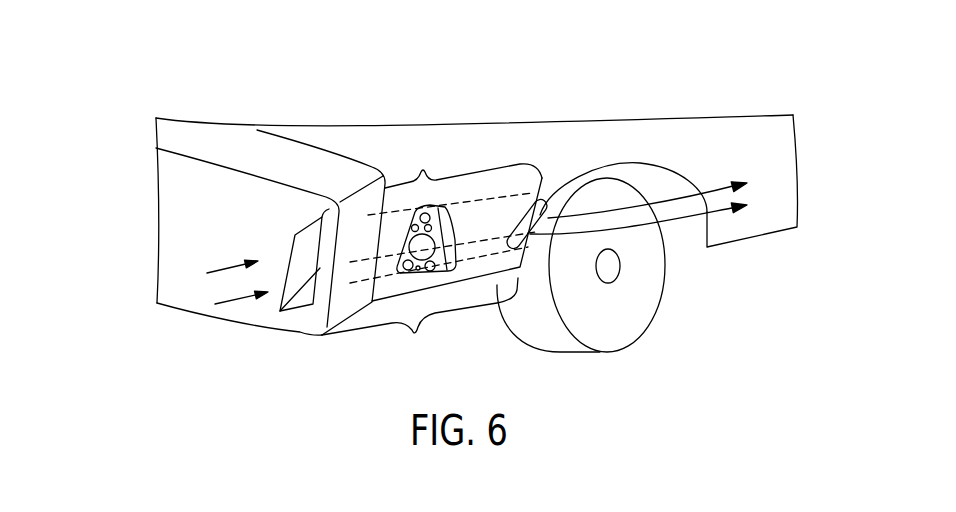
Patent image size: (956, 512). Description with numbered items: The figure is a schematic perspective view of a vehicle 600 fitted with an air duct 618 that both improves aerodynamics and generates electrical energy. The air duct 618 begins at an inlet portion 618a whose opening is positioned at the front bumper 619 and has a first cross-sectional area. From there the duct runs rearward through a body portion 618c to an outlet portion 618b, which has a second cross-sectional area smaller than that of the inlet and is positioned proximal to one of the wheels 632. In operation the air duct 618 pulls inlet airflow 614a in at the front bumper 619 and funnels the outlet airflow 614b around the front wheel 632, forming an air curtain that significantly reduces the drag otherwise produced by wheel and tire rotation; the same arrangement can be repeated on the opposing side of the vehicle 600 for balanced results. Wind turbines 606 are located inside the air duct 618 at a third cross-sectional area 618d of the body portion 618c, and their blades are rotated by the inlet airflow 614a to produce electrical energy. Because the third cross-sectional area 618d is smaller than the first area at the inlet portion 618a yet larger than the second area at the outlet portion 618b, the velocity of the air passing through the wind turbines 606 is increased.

The vehicle 600 is at (157, 92).
The wind turbines 606 is at (435, 210).
The inlet airflow 614a is at (237, 302).
The outlet airflow 614b is at (718, 213).
The air duct 618 is at (428, 279).
The inlet portion 618a is at (297, 309).
The outlet portion 618b is at (538, 203).
The body portion 618c is at (463, 163).
The third cross-sectional area 618d is at (420, 278).
The front bumper 619 is at (182, 301).
The wheels 632 is at (647, 298).